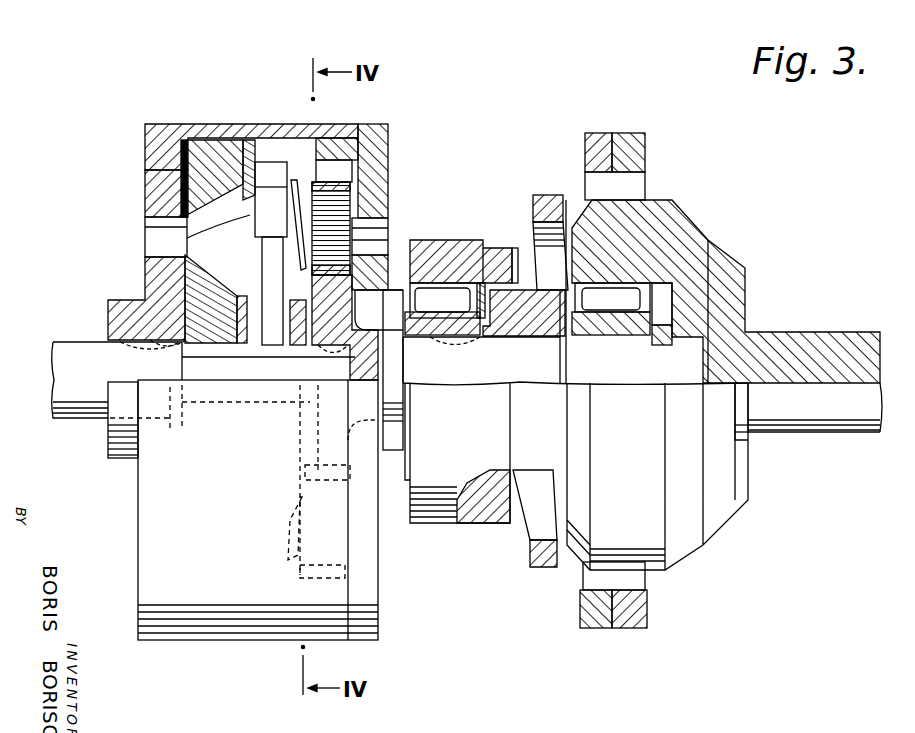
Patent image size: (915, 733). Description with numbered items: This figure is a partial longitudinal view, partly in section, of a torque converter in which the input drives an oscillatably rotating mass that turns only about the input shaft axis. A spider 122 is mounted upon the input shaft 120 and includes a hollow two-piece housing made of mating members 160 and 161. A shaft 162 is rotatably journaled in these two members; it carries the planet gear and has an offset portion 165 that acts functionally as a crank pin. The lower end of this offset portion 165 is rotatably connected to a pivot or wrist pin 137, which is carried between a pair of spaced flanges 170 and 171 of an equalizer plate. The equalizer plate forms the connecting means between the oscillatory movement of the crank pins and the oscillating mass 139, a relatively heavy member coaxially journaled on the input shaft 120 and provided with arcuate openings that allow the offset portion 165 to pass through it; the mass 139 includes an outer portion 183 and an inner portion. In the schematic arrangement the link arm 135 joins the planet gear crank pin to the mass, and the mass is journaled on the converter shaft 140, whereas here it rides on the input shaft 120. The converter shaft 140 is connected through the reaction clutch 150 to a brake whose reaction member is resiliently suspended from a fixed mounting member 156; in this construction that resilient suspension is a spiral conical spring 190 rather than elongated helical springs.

The input shaft 120 is at (92, 335).
The spider 122 is at (146, 283).
The link arm 135 is at (187, 238).
The pivot or wrist pin 137 is at (272, 352).
The oscillating mass 139 is at (216, 136).
The converter shaft 140 is at (575, 361).
The reaction clutch 150 is at (432, 262).
The fixed mounting member 156 is at (637, 136).
The housing mating member 160 is at (158, 150).
The housing mating member 161 is at (389, 150).
The shaft 162 is at (172, 207).
The offset portion 165 is at (245, 150).
The spaced flange 170 is at (250, 352).
The spaced flange 171 is at (297, 352).
The outer portion 183 is at (197, 142).
The conical spring 190 is at (526, 196).